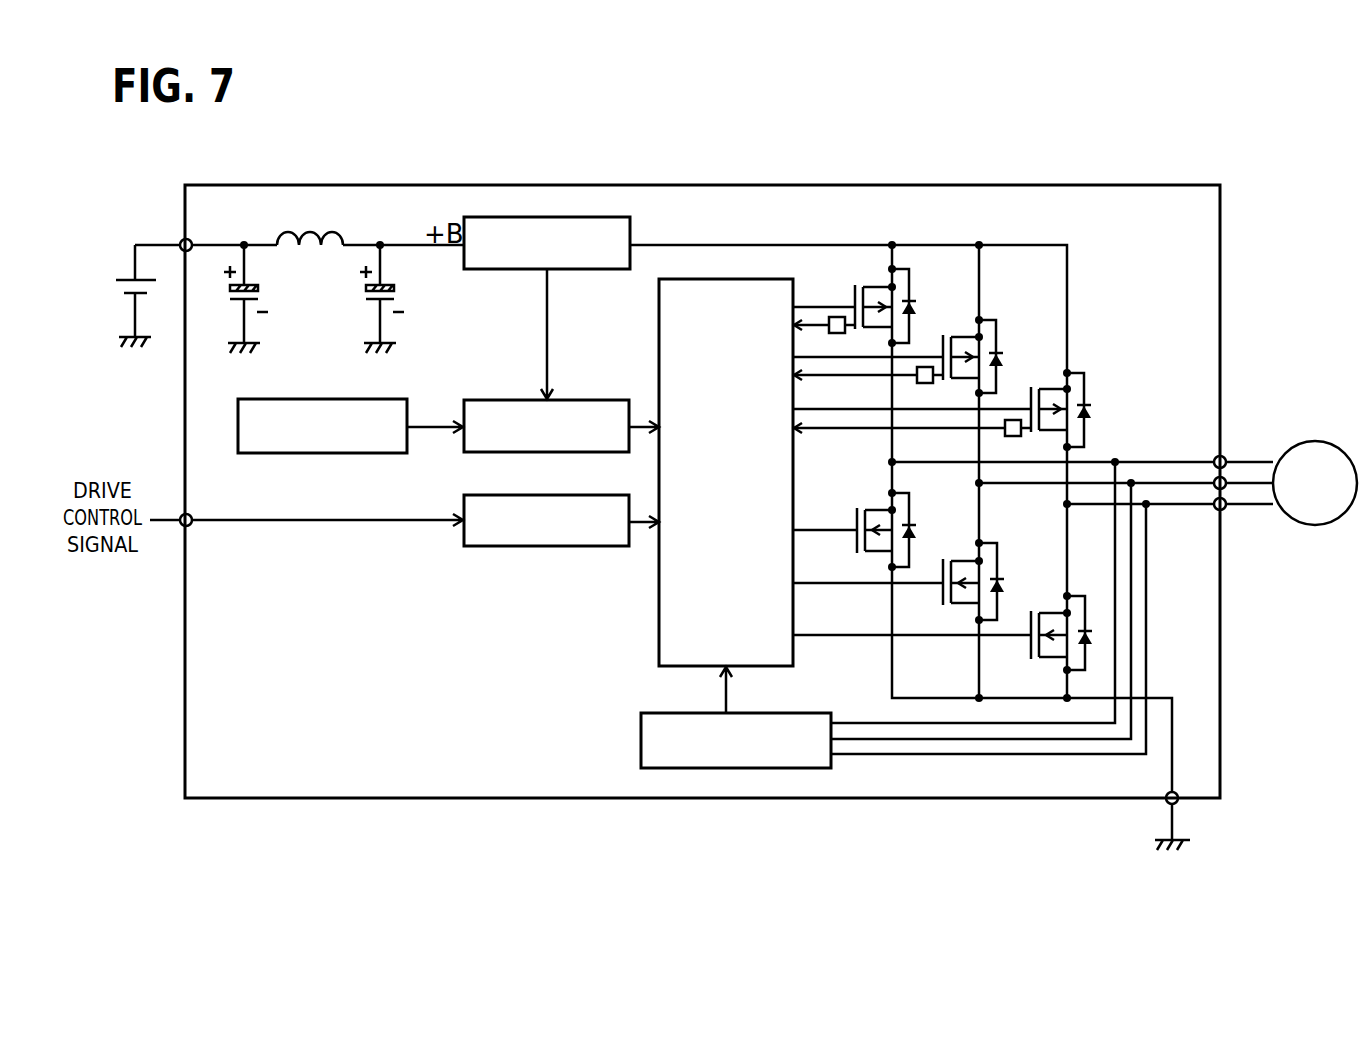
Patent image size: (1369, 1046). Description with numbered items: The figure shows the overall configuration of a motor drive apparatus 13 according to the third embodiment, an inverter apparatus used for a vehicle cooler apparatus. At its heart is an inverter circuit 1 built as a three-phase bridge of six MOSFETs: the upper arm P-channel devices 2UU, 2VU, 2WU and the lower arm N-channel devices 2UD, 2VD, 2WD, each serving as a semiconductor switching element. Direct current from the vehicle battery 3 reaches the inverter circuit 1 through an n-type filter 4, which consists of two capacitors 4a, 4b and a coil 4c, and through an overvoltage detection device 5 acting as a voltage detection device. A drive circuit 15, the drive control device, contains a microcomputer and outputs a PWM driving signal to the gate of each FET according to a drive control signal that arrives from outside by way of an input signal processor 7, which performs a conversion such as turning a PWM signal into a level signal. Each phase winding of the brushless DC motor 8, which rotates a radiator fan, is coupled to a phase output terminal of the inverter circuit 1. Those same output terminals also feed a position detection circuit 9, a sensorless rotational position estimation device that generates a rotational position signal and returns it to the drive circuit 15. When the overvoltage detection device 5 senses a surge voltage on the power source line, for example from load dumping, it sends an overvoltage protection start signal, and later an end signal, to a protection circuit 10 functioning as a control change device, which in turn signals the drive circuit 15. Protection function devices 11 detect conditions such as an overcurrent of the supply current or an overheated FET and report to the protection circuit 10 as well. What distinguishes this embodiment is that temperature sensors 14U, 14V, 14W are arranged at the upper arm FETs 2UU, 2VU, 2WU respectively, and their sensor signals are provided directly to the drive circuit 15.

The inverter circuit 1 is at (922, 523).
The battery 3 is at (109, 288).
The filter 4 is at (331, 273).
The capacitor 4a is at (268, 295).
The capacitor 4b is at (400, 290).
The coil 4c is at (316, 259).
The overvoltage detection device 5 is at (632, 228).
The input signal processor 7 is at (547, 547).
The brushless DC motor 8 is at (1316, 440).
The position detection circuit 9 is at (641, 739).
The protection circuit 10 is at (587, 399).
The protection function devices 11 is at (325, 398).
The motor drive apparatus 13 is at (831, 185).
The drive circuit 15 is at (727, 278).
The temperature sensor 14U is at (832, 315).
The temperature sensor 14V is at (922, 365).
The temperature sensor 14W is at (1010, 418).
The MOSFET 2UU is at (873, 280).
The MOSFET 2VU is at (965, 328).
The MOSFET 2WU is at (1057, 383).
The MOSFET 2UD is at (877, 502).
The MOSFET 2VD is at (968, 552).
The MOSFET 2WD is at (1048, 602).